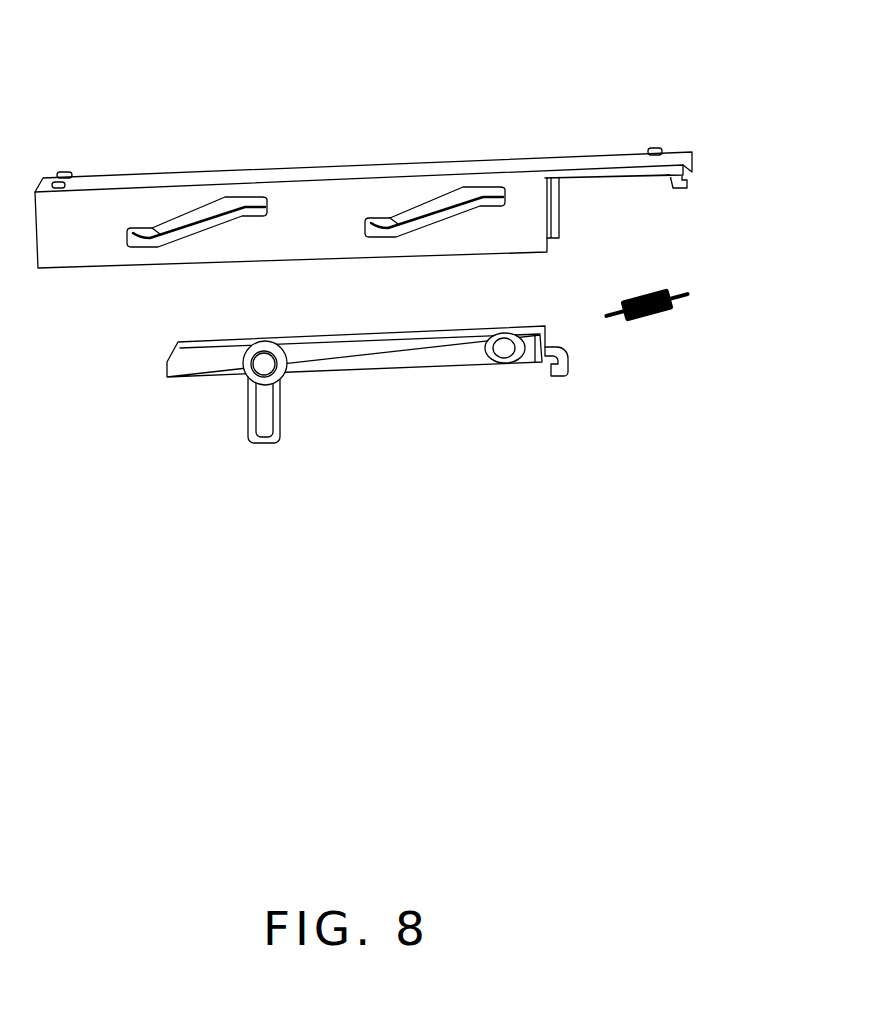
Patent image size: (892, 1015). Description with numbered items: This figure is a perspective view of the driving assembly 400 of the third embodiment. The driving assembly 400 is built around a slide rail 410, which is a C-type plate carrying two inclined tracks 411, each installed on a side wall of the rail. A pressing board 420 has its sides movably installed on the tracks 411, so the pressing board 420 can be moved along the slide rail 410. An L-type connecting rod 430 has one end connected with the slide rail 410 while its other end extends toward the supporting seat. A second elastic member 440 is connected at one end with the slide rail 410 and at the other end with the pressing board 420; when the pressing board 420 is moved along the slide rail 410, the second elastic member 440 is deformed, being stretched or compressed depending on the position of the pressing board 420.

The driving assembly 400 is at (538, 139).
The slide rail 410 is at (277, 176).
The inclined track 411 is at (128, 240).
The pressing board 420 is at (417, 357).
The connecting rod 430 is at (265, 418).
The second elastic member 440 is at (628, 325).